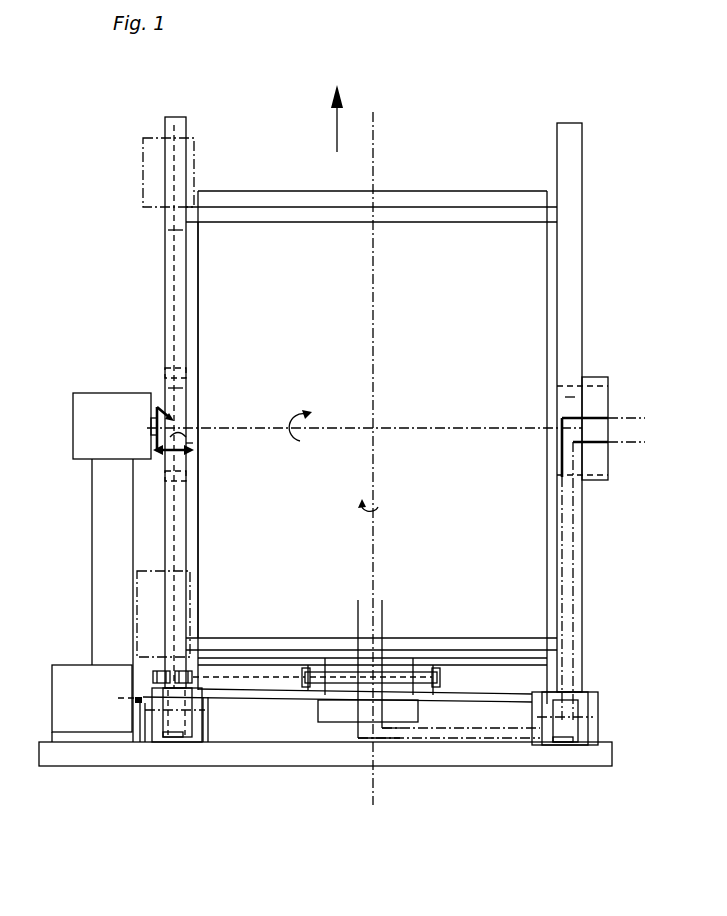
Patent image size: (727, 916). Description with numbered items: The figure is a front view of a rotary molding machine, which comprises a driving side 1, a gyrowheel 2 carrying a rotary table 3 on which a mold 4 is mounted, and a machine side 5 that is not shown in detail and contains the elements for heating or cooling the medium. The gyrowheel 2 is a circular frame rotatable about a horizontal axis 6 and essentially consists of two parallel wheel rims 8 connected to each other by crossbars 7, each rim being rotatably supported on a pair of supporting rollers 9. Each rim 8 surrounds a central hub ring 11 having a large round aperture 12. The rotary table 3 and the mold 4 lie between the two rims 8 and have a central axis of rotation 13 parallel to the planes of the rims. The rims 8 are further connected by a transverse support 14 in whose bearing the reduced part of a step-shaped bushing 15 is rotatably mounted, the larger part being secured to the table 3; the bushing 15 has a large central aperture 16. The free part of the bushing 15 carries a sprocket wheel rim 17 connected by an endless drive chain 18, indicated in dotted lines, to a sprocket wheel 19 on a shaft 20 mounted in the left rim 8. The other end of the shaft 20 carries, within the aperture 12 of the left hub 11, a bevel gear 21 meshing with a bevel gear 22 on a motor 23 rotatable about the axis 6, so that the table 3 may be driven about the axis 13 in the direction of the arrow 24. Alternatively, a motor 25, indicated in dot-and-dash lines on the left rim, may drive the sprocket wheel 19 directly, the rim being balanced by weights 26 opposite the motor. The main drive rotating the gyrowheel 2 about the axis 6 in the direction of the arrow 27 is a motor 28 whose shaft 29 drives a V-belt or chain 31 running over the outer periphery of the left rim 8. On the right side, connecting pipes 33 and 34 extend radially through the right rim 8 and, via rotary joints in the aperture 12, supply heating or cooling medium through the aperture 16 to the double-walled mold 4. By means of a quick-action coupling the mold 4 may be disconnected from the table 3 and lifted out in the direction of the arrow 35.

The driving side 1 is at (35, 291).
The gyrowheel 2 is at (372, 391).
The rotary table 3 is at (247, 662).
The mold 4 is at (272, 249).
The machine side 5 is at (619, 120).
The horizontal axis 6 is at (417, 428).
The crossbars 7 is at (483, 217).
The wheel rims 8 is at (186, 125).
The supporting rollers 9 is at (191, 722).
The hub ring 11 is at (183, 378).
The aperture 12 is at (180, 393).
The axis of rotation 13 is at (376, 333).
The transverse support 14 is at (478, 700).
The step-shaped bushing 15 is at (312, 713).
The central aperture 16 is at (397, 735).
The sprocket wheel rim 17 is at (307, 684).
The endless drive chain 18 is at (248, 680).
The sprocket wheel 19 is at (192, 670).
The shaft 20 is at (180, 507).
The bevel gear 21 is at (192, 443).
The bevel gear 22 is at (174, 417).
The motor 23 is at (115, 403).
The arrow 24 is at (356, 507).
The motor 25 is at (160, 590).
The weights 26 is at (160, 167).
The arrow 27 is at (310, 417).
The motor 28 is at (72, 680).
The shaft 29 is at (138, 742).
The V-belt or chain 31 is at (172, 240).
The connecting pipe 33 is at (634, 418).
The connecting pipe 34 is at (633, 444).
The arrow 35 is at (325, 114).